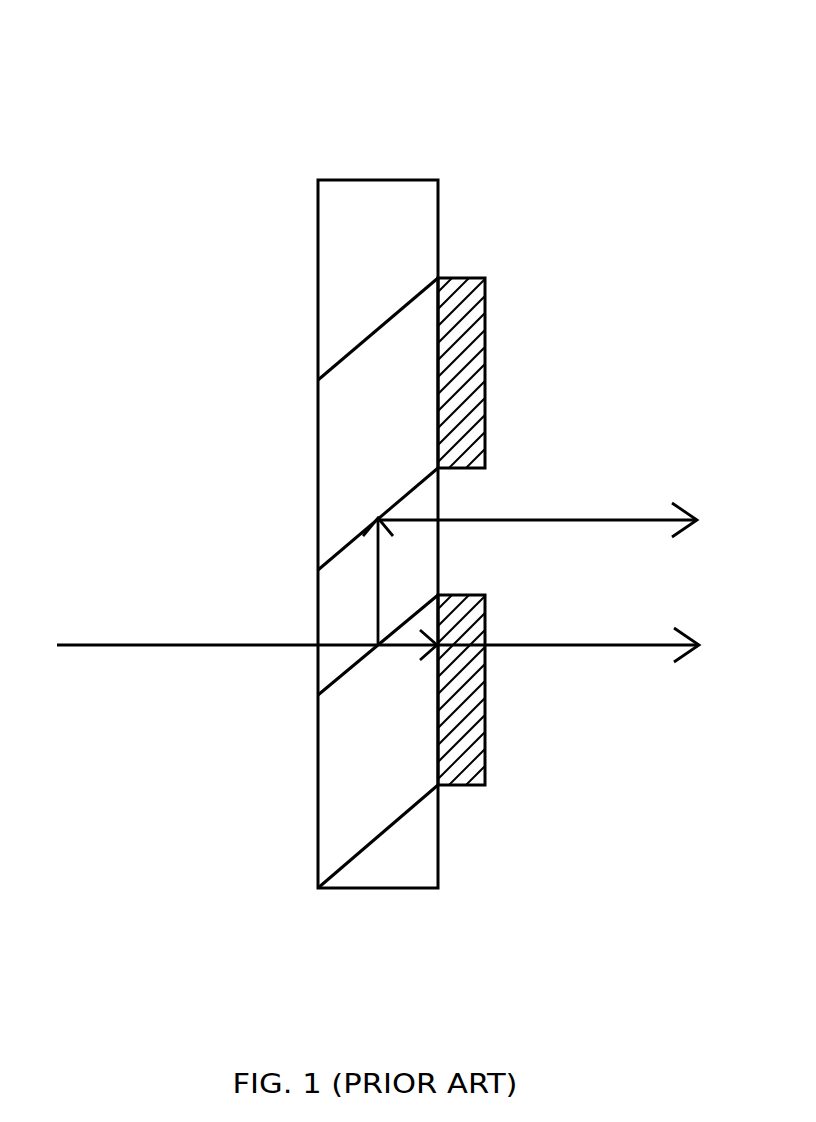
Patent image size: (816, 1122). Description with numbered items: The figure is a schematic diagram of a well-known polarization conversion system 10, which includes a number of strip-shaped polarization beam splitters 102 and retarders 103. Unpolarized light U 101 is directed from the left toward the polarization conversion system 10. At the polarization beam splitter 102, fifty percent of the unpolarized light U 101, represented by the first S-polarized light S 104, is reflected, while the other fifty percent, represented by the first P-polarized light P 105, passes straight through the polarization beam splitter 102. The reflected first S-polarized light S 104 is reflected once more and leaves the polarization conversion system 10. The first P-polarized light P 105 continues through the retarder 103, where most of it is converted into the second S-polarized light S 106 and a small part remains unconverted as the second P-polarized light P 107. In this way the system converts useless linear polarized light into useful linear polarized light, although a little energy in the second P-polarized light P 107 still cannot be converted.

The polarization conversion system 10 is at (370, 76).
The unpolarized light 101 is at (247, 628).
The polarization beam splitter 102 is at (385, 252).
The retarder 103 is at (473, 288).
The first S-polarized light 104 is at (359, 581).
The first P-polarized light 105 is at (412, 659).
The second S-polarized light 106 is at (537, 599).
The second P-polarized light 107 is at (568, 662).